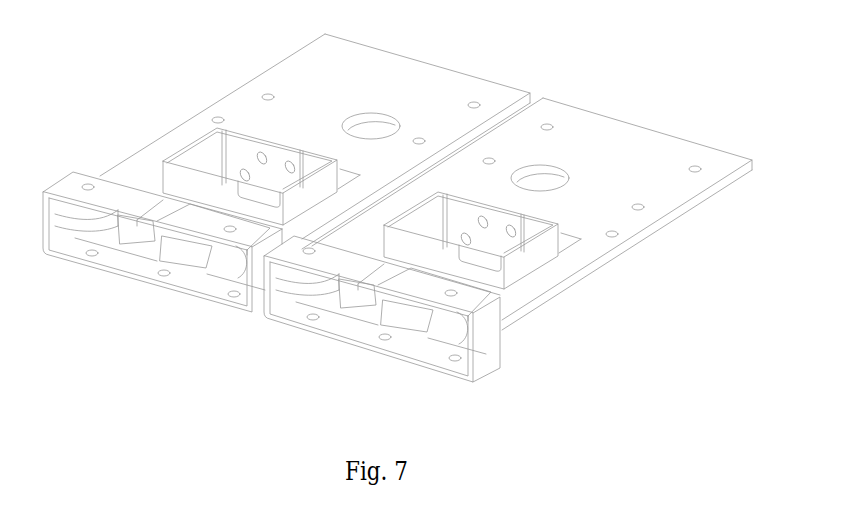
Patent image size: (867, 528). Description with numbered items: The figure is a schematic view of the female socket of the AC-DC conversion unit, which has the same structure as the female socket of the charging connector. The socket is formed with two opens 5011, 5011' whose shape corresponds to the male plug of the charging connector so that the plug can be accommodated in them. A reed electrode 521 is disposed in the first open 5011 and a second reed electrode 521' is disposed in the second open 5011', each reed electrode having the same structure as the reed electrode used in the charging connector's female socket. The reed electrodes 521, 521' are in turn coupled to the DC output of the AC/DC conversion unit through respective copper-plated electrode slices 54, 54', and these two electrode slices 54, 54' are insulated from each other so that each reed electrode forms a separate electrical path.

The copper-plated electrode slice 54 is at (315, 126).
The copper-plated electrode slice 54' is at (532, 189).
The reed electrode 521 is at (250, 136).
The reed electrode 521' is at (492, 162).
The open 5011 is at (162, 283).
The open 5011' is at (349, 319).